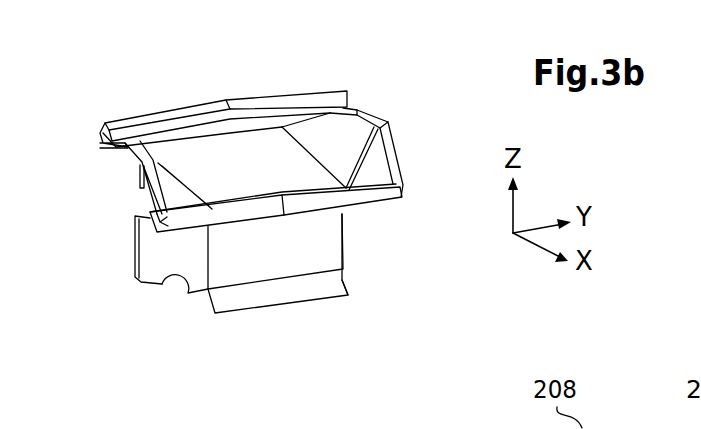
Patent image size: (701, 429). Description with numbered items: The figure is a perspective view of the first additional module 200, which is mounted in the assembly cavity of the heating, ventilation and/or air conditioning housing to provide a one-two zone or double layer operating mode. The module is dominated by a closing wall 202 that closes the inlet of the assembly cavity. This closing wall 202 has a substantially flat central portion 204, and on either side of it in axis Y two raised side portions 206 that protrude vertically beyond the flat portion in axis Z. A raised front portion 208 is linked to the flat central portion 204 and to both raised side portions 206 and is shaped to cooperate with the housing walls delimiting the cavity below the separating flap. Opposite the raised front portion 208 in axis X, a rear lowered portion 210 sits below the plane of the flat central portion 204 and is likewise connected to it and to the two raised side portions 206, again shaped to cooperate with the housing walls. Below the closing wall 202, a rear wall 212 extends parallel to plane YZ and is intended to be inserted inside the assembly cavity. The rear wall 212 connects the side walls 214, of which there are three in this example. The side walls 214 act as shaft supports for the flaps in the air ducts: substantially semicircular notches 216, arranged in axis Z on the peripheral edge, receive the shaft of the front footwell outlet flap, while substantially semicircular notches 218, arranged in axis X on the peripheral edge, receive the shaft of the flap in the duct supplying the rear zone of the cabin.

The first additional module 200 is at (378, 299).
The closing wall 202 is at (356, 88).
The flat central portion 204 is at (264, 150).
The raised side portions 206 is at (166, 116).
The raised front portion 208 is at (203, 130).
The rear lowered portion 210 is at (316, 190).
The rear wall 212 is at (333, 258).
The side walls 214 is at (153, 258).
The notches 216 is at (138, 203).
The notches 218 is at (173, 304).